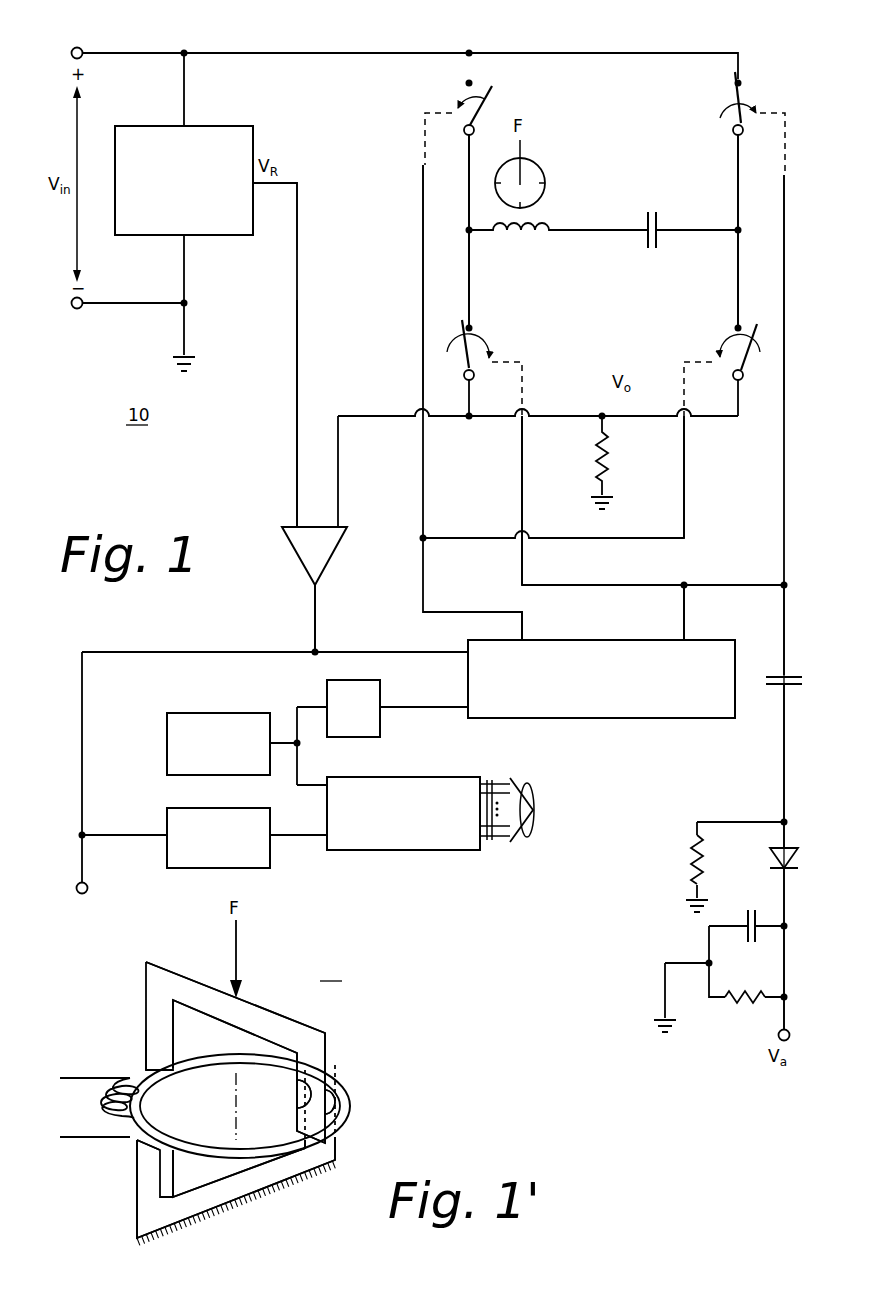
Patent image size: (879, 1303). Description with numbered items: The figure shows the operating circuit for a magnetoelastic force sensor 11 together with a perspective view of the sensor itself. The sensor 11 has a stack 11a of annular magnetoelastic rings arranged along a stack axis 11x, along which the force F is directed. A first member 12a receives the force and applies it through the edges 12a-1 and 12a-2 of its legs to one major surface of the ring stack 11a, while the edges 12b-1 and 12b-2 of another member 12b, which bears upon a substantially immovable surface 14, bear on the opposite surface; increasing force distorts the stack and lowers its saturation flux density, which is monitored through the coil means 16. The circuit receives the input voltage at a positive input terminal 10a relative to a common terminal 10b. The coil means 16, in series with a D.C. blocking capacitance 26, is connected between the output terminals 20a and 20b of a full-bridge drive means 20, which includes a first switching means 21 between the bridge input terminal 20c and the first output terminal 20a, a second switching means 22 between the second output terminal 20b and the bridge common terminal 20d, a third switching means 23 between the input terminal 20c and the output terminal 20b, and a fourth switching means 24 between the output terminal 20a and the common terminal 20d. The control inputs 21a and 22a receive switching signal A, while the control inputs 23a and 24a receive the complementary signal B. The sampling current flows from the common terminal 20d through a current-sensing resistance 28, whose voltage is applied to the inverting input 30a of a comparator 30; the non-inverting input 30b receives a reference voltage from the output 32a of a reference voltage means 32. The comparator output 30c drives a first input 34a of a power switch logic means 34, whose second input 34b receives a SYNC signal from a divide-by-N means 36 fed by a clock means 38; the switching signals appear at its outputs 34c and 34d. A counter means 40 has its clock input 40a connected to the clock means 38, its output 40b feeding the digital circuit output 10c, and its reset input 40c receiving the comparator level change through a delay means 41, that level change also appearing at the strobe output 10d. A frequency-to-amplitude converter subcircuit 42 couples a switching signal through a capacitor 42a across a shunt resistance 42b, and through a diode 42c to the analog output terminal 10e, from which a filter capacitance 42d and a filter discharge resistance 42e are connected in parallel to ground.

In FIG. 1, the input terminal 10a is at (77, 47).
In FIG. 1, the negative-polarity/circuit common potential terminal 10b is at (78, 309).
In FIG. 1, the first circuit output 10c is at (529, 842).
In FIG. 1, the strobe output 10d is at (80, 882).
In FIG. 1, the circuit output terminal 10e is at (778, 1038).
In FIG. 1, the sensor 11 is at (541, 156).
In FIG. 1', the sensor 11 is at (240, 1099).
In FIG. 1', the stack 11a is at (342, 1098).
In FIG. 1', the stack axis 11x is at (238, 1082).
In FIG. 1', the first member 12a is at (327, 1044).
In FIG. 1', the edge 12a-1 is at (160, 1065).
In FIG. 1', the edge 12a-2 is at (324, 1107).
In FIG. 1', the another member 12b is at (324, 1142).
In FIG. 1', the edge 12b-1 is at (336, 1074).
In FIG. 1', the edge 12b-2 is at (148, 1150).
In FIG. 1', the substantially immovable surface 14 is at (300, 1173).
In FIG. 1, the coil means 16 is at (524, 234).
In FIG. 1', the coil means 16 is at (154, 1102).
In FIG. 1, the full-bridge drive means 20 is at (410, 240).
In FIG. 1, the first output terminal 20a is at (468, 231).
In FIG. 1, the second output terminal 20b is at (737, 228).
In FIG. 1, the bridge input terminal 20c is at (469, 53).
In FIG. 1, the bridge common terminal 20d is at (570, 416).
In FIG. 1, the first switching means 21 is at (494, 92).
In FIG. 1, the control input 21a is at (424, 158).
In FIG. 1, the second switching means 22 is at (756, 335).
In FIG. 1, the control input 22a is at (686, 480).
In FIG. 1, the third switching means 23 is at (733, 92).
In FIG. 1, the control input 23a is at (785, 136).
In FIG. 1, the fourth switching means 24 is at (474, 334).
In FIG. 1, the control input 24a is at (521, 480).
In FIG. 1, the D.C. blocking capacitance 26 is at (648, 237).
In FIG. 1, the current-sensing resistance 28 is at (602, 464).
In FIG. 1, the comparator 30 is at (308, 569).
In FIG. 1, the inverting input 30a is at (338, 501).
In FIG. 1, the non-inverting input 30b is at (297, 502).
In FIG. 1, the output 30c is at (316, 616).
In FIG. 1, the reference voltage means 32 is at (203, 126).
In FIG. 1, the output 32a is at (259, 193).
In FIG. 1, the power switch logic means 34 is at (618, 640).
In FIG. 1, the first input 34a is at (464, 652).
In FIG. 1, the second input 34b is at (468, 707).
In FIG. 1, the first output 34c is at (518, 628).
In FIG. 1, the second output 34d is at (686, 630).
In FIG. 1, the divide-by-N means 36 is at (327, 686).
In FIG. 1, the clock means 38 is at (202, 713).
In FIG. 1, the counter means 40 is at (404, 777).
In FIG. 1, the clock input 40a is at (327, 785).
In FIG. 1, the output 40b is at (486, 848).
In FIG. 1, the reset R input 40c is at (327, 835).
In FIG. 1, the delay means 41 is at (182, 808).
In FIG. 1, the frequency-to-amplitude converter subcircuit 42 is at (667, 928).
In FIG. 1, the capacitor 42a is at (776, 692).
In FIG. 1, the shunt resistance 42b is at (702, 867).
In FIG. 1, the unidirectionally-conducting element 42c is at (768, 850).
In FIG. 1, the filter capacitance 42d is at (756, 944).
In FIG. 1, the filter discharge resistance 42e is at (752, 1004).